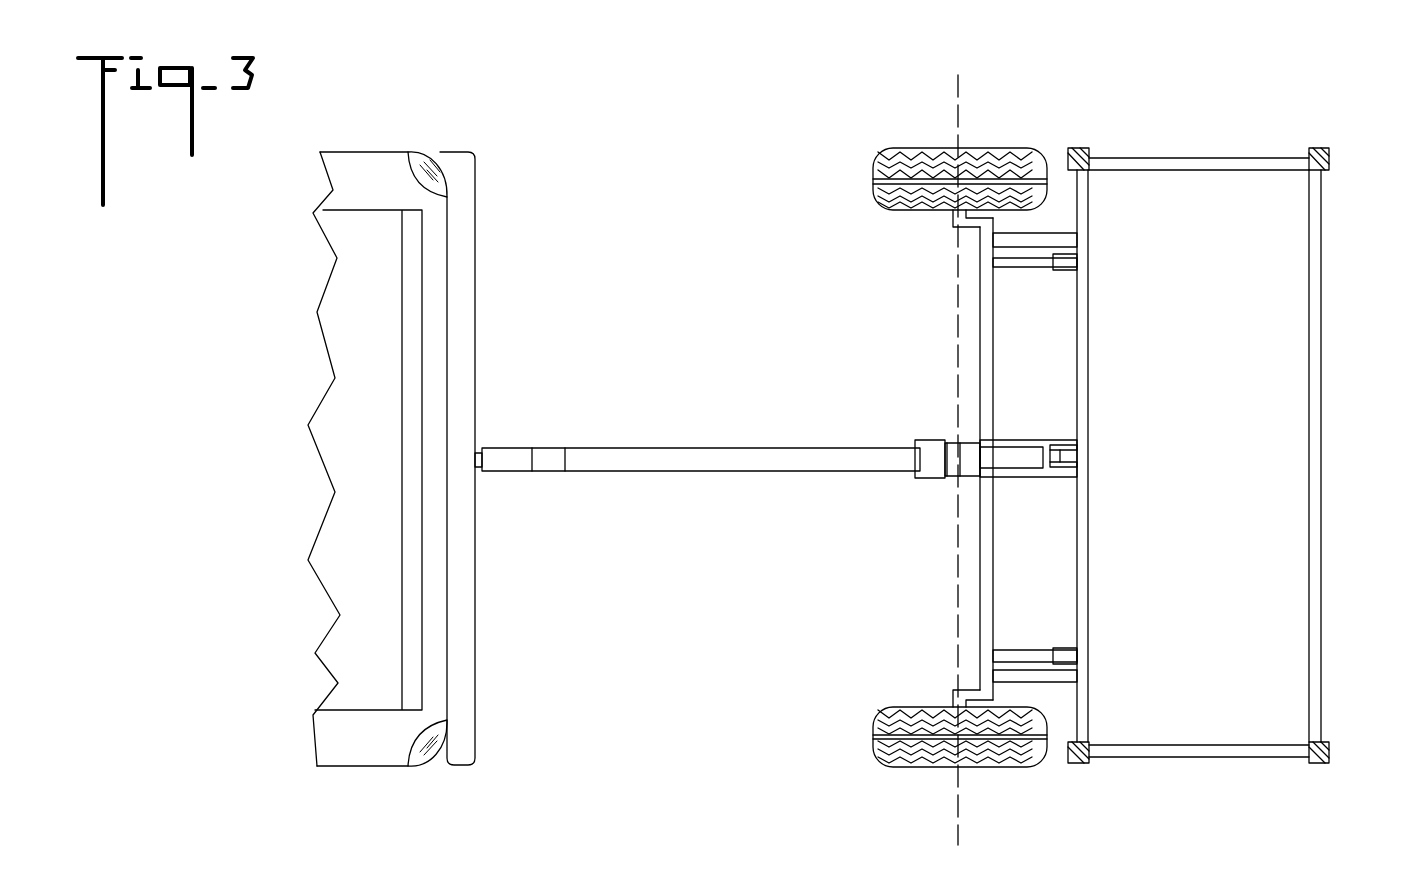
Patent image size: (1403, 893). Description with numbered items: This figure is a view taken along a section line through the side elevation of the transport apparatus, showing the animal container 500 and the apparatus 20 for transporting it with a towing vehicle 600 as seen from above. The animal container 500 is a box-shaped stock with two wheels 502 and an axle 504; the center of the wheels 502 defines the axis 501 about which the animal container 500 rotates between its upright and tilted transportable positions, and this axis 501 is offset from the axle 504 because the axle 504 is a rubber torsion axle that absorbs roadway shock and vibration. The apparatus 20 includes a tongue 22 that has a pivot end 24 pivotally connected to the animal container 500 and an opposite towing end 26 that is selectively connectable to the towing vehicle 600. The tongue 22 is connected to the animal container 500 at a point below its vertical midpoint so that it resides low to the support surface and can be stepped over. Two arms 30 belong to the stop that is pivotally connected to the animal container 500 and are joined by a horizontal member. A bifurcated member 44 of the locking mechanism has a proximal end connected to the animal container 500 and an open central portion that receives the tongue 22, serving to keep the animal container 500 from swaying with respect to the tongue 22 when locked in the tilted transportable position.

The apparatus 20 is at (1004, 458).
The tongue 22 is at (733, 462).
The pivot end 24 is at (1050, 458).
The towing end 26 is at (510, 462).
The arms 30 is at (1005, 262).
The bifurcated member 44 is at (1028, 458).
The animal container 500 is at (1328, 137).
The axis 501 is at (957, 128).
The wheels 502 is at (873, 195).
The axle 504 is at (987, 573).
The towing vehicle 600 is at (502, 160).